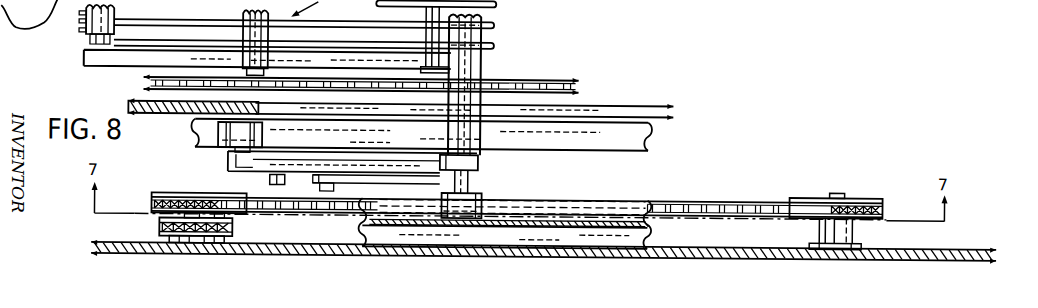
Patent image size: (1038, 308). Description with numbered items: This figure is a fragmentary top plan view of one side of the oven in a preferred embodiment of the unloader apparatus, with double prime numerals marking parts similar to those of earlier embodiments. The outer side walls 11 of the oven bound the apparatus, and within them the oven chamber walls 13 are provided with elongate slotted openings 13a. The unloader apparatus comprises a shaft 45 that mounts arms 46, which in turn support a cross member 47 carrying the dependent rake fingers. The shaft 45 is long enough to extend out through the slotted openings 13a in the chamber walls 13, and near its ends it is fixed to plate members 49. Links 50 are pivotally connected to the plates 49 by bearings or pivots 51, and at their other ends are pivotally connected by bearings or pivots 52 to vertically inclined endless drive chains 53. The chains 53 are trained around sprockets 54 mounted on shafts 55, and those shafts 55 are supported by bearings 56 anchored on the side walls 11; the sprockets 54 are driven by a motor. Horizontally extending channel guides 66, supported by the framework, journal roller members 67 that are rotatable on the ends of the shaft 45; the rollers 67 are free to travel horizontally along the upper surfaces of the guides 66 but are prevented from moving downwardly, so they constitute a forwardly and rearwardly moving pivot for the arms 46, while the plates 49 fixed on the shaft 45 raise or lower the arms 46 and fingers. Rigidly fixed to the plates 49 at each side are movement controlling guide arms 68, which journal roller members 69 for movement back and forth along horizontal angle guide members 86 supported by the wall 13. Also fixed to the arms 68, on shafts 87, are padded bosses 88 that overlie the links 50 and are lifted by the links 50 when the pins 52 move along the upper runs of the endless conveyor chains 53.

The cross member 47 is at (82, 45).
The arms 46 is at (125, 58).
The shaft 45 is at (476, 63).
The oven chamber walls 13 is at (144, 113).
The slotted openings 13a is at (614, 103).
The horizontal angle guide members 86 is at (652, 132).
The roller members 69 is at (263, 133).
The movement controlling guide arms 68 is at (331, 160).
The bearings or pivots 51 is at (443, 160).
The plate members 49 is at (478, 160).
The roller members 67 is at (484, 201).
The channel guides 66 is at (621, 202).
The endless drive chains 53 is at (152, 200).
The sprockets 54 is at (177, 196).
The shafts 55 is at (197, 196).
The bearings 56 is at (168, 238).
The links 50 is at (328, 212).
The bearings or pivots 52 is at (316, 210).
The shafts 87 is at (276, 183).
The padded bosses 88 is at (313, 178).
The outer side walls 11 is at (976, 243).